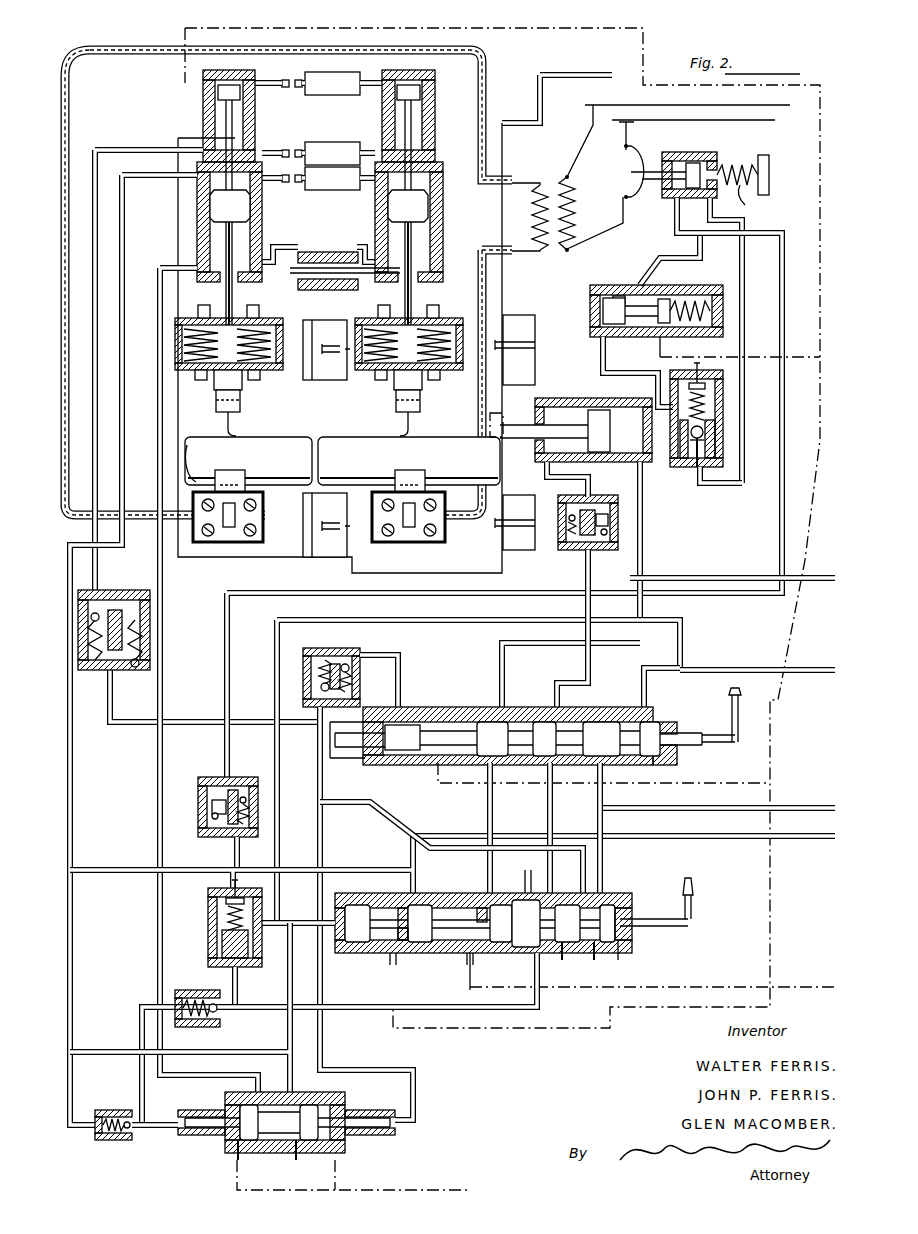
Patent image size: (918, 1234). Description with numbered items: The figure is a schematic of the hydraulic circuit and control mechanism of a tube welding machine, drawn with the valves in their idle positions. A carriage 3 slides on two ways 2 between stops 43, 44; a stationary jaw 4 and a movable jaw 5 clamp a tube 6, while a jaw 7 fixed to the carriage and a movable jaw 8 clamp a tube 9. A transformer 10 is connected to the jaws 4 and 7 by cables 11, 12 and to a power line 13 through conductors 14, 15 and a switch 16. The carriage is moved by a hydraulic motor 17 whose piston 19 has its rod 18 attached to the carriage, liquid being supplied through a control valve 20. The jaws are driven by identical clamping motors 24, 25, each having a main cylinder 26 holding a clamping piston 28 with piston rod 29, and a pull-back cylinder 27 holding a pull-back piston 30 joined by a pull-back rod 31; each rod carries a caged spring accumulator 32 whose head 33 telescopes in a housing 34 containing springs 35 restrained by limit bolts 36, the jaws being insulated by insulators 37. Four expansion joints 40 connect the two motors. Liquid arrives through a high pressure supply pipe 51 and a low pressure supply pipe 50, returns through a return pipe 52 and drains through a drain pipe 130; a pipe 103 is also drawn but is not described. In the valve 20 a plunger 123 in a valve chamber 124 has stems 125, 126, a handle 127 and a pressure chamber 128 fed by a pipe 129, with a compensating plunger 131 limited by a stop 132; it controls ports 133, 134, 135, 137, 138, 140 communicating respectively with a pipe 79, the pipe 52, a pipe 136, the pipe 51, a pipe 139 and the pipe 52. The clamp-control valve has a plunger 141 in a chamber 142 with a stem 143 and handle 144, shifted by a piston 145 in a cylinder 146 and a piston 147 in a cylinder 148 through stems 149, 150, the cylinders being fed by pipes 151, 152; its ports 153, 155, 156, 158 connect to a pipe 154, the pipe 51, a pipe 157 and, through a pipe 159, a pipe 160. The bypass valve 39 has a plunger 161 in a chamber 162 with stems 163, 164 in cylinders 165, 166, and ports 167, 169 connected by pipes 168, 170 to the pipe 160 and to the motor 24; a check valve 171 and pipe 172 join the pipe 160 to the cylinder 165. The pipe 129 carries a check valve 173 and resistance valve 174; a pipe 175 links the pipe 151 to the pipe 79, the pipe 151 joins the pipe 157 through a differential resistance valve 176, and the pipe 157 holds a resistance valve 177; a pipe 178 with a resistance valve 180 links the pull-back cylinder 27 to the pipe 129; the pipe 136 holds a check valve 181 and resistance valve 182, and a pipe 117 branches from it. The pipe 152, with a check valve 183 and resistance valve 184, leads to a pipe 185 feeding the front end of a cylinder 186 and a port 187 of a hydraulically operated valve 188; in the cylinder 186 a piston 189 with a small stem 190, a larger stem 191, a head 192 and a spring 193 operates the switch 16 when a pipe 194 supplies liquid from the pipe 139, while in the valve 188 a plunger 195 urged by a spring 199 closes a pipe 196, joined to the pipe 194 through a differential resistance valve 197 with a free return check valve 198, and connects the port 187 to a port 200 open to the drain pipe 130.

The frame block 2 is at (340, 380).
The frame 3 is at (340, 355).
The bearing block 4 is at (235, 540).
The pipe 5 is at (245, 424).
The roll 6 is at (248, 468).
The bearing block 7 is at (415, 540).
The pipe 8 is at (398, 424).
The roll 9 is at (409, 468).
The motor winding 10 is at (545, 250).
The port 11 is at (520, 180).
The port 12 is at (512, 255).
The supply bus 13 is at (688, 139).
The field winding 14 is at (580, 178).
The lead 15 is at (634, 135).
The solenoid 16 is at (628, 176).
The cylinder 17 is at (572, 392).
The piston rod 18 is at (540, 426).
The piston 19 is at (610, 431).
The valve end 20 is at (677, 760).
The cylinder 24 is at (197, 200).
The cylinder 25 is at (443, 240).
The cylinder wall 26 is at (197, 236).
The cylinder 27 is at (203, 97).
The piston 28 is at (319, 206).
The piston rod 29 is at (226, 292).
The piston 30 is at (316, 91).
The piston rod 31 is at (226, 119).
The bolt 32 is at (202, 370).
The spring housing 33 is at (255, 318).
The bolt 34 is at (256, 370).
The spring 35 is at (270, 325).
The nut 36 is at (254, 380).
The coupling 37 is at (214, 400).
The valve body 39 is at (632, 945).
The control device 40 is at (320, 262).
The bolt 43 is at (312, 380).
The bracket 44 is at (529, 320).
The line 50 is at (816, 992).
The pipe 51 is at (826, 808).
The pipe 52 is at (792, 838).
The pipe 79 is at (826, 680).
The supply pipe 103 is at (580, 75).
The pipe 117 is at (830, 585).
The valve land 123 is at (621, 739).
The valve casing 124 is at (432, 707).
The valve stem 125 is at (715, 745).
The valve stem 126 is at (428, 750).
The handle 127 is at (742, 700).
The piston 128 is at (395, 725).
The pipe 129 is at (405, 668).
The panel boundary 130 is at (180, 68).
The rod 131 is at (365, 750).
The cylinder 132 is at (345, 765).
The pipe 133 is at (604, 765).
The pipe 134 is at (636, 700).
The pipe 135 is at (552, 765).
The pipe 136 is at (588, 658).
The valve land 137 is at (538, 714).
The pipe 138 is at (492, 765).
The pipe 139 is at (502, 655).
The valve land 140 is at (488, 712).
The valve land 141 is at (585, 923).
The port 142 is at (625, 955).
The lever 143 is at (668, 915).
The handle 144 is at (695, 888).
The partition 145 is at (403, 945).
The port 146 is at (455, 945).
The valve casing 147 is at (355, 910).
The valve land 148 is at (384, 912).
The valve land 149 is at (450, 918).
The port 150 is at (388, 950).
The pipe 151 is at (290, 925).
The pipe 152 is at (782, 290).
The port 153 is at (596, 955).
The pipe 154 is at (400, 825).
The port 155 is at (565, 955).
The port 156 is at (533, 893).
The pipe 157 is at (140, 1020).
The valve land 158 is at (510, 947).
The pipe 159 is at (132, 865).
The pipe 160 is at (152, 185).
The valve land 161 is at (279, 1122).
The valve casing 162 is at (340, 1108).
The valve stem 163 is at (225, 1130).
The valve stem 164 is at (345, 1140).
The cylinder 165 is at (190, 1135).
The cylinder 166 is at (380, 1127).
The port 167 is at (292, 1160).
The pipe 168 is at (276, 1050).
The port 169 is at (240, 1155).
The pipe 170 is at (168, 278).
The check valve 171 is at (100, 1140).
The pipe 172 is at (150, 1130).
The check valve 173 is at (352, 675).
The valve housing 174 is at (297, 660).
The pipe 175 is at (462, 620).
The relief valve 176 is at (215, 940).
The check valve 177 is at (208, 992).
The pipe 178 is at (125, 153).
The check valve 180 is at (135, 665).
The valve housing 181 is at (602, 505).
The check valve 182 is at (572, 550).
The valve housing 183 is at (196, 795).
The check valve 184 is at (258, 795).
The pipe 185 is at (662, 260).
The pipe 186 is at (691, 340).
The pipe 187 is at (650, 337).
The valve housing 188 is at (600, 312).
The valve housing 189 is at (692, 155).
The valve stem 190 is at (665, 185).
The spring 191 is at (742, 165).
The spring abutment 192 is at (769, 175).
The spring seat 193 is at (750, 205).
The pipe 194 is at (728, 490).
The plug 195 is at (613, 296).
The pipe 196 is at (600, 360).
The relief valve 197 is at (705, 434).
The pipe 198 is at (688, 460).
The spring 199 is at (716, 296).
The valve piston 200 is at (672, 295).